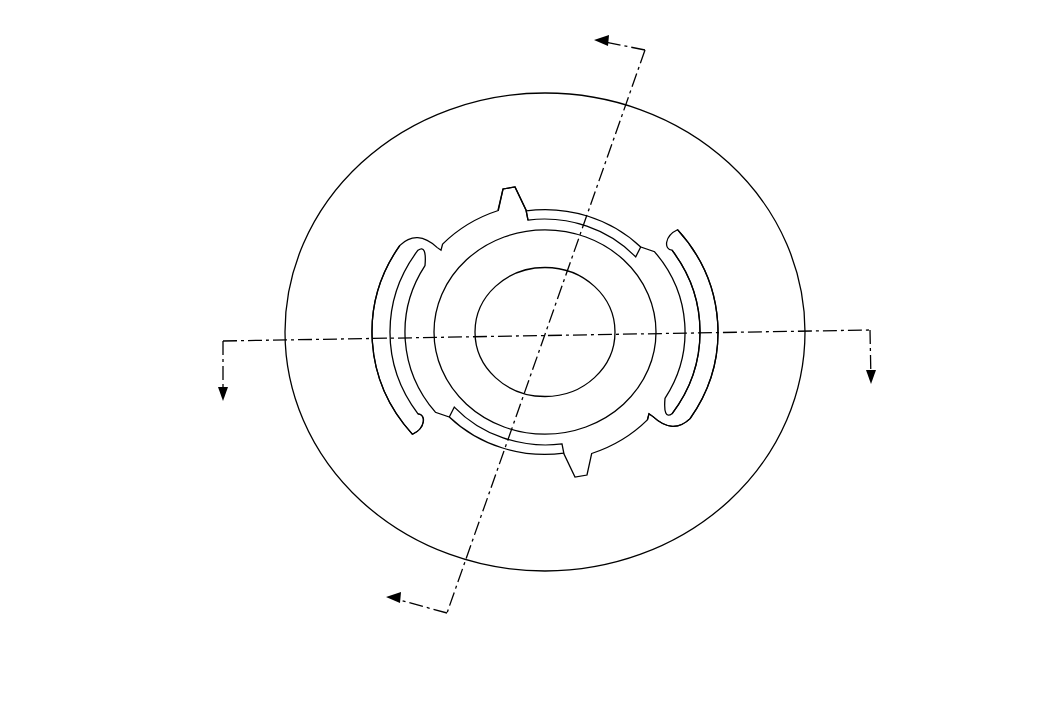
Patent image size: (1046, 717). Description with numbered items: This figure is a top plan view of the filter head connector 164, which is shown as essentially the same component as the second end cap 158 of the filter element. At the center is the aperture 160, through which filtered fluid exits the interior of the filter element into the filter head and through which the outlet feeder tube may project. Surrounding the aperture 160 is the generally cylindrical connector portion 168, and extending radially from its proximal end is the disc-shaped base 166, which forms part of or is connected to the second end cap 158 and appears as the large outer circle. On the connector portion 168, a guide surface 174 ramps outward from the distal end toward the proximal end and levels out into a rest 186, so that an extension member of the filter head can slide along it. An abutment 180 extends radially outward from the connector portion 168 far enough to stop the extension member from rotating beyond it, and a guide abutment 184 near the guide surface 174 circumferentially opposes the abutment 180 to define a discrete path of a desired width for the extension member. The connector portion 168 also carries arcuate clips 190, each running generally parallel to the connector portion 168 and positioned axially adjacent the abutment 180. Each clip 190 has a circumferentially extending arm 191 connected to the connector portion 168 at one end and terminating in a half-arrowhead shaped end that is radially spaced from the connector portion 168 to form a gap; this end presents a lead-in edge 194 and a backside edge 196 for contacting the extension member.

The second end cap 158 is at (250, 545).
The aperture 160 is at (612, 292).
The filter head connector 164 is at (236, 262).
The base 166 is at (778, 283).
The connector portion 168 is at (472, 237).
The guide surface 174 is at (618, 233).
The abutment 180 is at (680, 428).
The guide abutment 184 is at (592, 477).
The rest 186 is at (551, 208).
The clip 190 is at (705, 400).
The circumferentially extending arm 191 is at (714, 318).
The lead-in edge 194 is at (420, 422).
The backside edge 196 is at (413, 435).